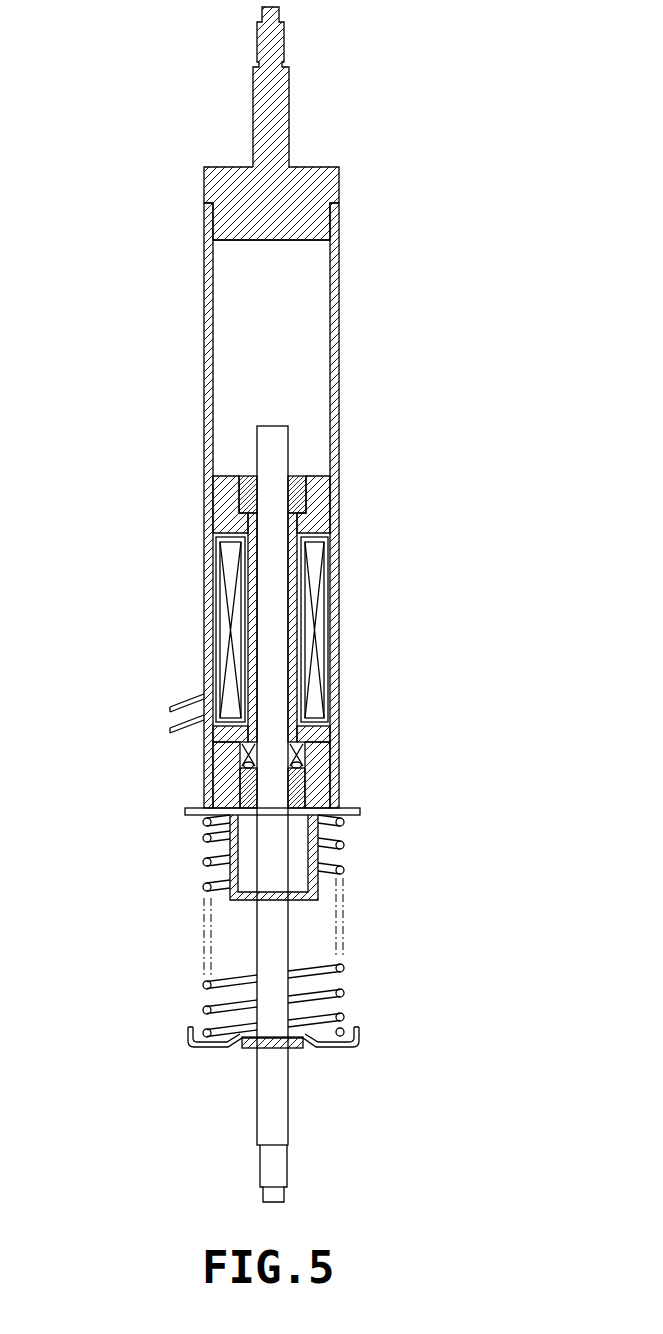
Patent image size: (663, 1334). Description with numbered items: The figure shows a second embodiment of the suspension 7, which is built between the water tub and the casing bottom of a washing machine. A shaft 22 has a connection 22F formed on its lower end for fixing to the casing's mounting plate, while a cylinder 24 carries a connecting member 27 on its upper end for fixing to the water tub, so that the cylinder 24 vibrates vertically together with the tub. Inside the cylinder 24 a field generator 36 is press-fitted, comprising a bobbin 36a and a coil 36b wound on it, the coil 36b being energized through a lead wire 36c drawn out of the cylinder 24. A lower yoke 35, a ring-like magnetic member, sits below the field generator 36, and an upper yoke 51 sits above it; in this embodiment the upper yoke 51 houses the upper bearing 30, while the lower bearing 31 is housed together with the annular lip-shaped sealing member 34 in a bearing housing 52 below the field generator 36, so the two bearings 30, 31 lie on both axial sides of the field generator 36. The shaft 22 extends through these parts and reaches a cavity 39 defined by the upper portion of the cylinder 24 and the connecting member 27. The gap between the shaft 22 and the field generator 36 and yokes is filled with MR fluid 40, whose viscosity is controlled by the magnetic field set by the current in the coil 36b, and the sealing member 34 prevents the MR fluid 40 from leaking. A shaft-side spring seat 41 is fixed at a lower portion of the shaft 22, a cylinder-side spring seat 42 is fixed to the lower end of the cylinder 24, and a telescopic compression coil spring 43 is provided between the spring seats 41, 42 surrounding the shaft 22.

The suspension 7 is at (160, 192).
The connecting member 27 is at (253, 100).
The cylinder 24 is at (204, 372).
The cavity 39 is at (304, 327).
The shaft 22 is at (258, 937).
The bearing 30 is at (232, 491).
The upper yoke 51 is at (325, 497).
The MR fluid 40 is at (297, 588).
The field generator 36 is at (335, 641).
The bobbin 36a is at (217, 609).
The coil 36b is at (222, 633).
The lead wire 36c is at (172, 706).
The lower yoke 35 is at (327, 731).
The sealing member 34 is at (305, 760).
The bearing 31 is at (242, 783).
The bearing housing 52 is at (325, 785).
The cylinder-side spring seat 42 is at (185, 812).
The coil spring 43 is at (205, 887).
The shaft-side spring seat 41 is at (187, 1046).
The connection 22F is at (262, 1170).